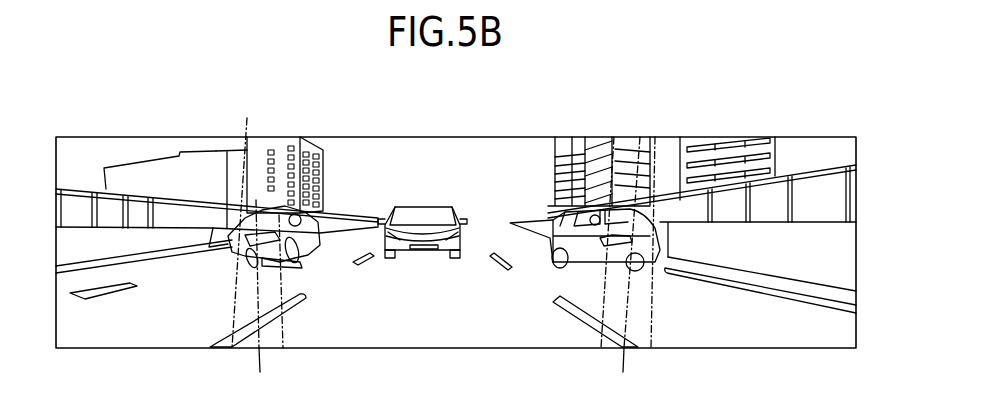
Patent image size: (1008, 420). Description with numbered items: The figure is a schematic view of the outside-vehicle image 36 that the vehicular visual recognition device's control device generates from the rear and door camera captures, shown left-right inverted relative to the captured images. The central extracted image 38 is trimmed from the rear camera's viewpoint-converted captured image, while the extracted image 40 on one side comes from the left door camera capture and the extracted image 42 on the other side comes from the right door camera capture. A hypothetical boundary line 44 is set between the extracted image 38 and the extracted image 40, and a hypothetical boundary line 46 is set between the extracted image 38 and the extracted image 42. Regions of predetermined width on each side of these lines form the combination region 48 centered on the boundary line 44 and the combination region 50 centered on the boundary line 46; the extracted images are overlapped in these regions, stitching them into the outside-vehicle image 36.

The outside-vehicle image 36 is at (694, 136).
The extracted image 38 is at (432, 137).
The extracted image 40 is at (783, 137).
The extracted image 42 is at (147, 137).
The hypothetical boundary line 44 is at (625, 357).
The hypothetical boundary line 46 is at (261, 358).
The combination region 48 is at (653, 300).
The combination region 50 is at (232, 310).